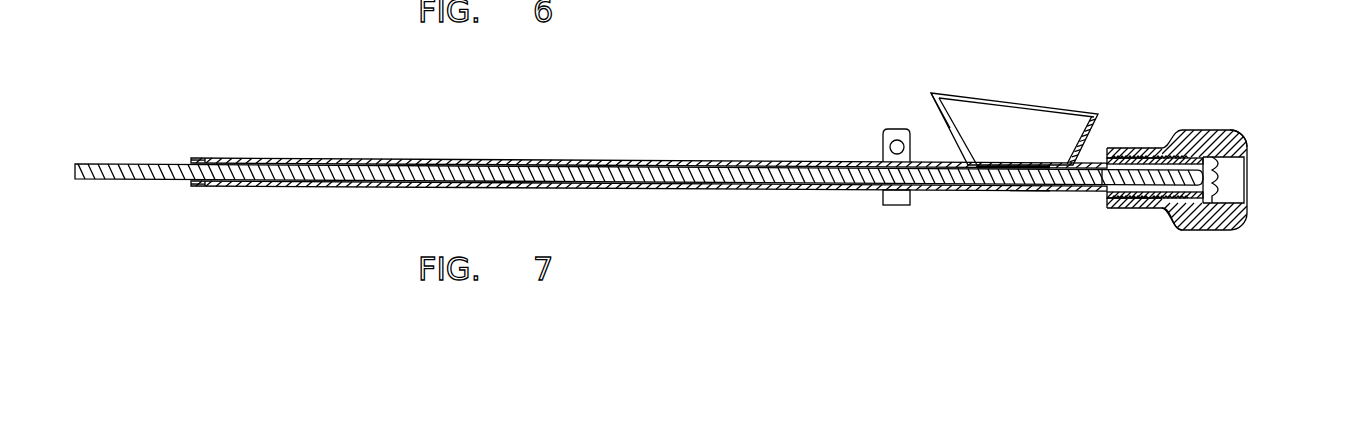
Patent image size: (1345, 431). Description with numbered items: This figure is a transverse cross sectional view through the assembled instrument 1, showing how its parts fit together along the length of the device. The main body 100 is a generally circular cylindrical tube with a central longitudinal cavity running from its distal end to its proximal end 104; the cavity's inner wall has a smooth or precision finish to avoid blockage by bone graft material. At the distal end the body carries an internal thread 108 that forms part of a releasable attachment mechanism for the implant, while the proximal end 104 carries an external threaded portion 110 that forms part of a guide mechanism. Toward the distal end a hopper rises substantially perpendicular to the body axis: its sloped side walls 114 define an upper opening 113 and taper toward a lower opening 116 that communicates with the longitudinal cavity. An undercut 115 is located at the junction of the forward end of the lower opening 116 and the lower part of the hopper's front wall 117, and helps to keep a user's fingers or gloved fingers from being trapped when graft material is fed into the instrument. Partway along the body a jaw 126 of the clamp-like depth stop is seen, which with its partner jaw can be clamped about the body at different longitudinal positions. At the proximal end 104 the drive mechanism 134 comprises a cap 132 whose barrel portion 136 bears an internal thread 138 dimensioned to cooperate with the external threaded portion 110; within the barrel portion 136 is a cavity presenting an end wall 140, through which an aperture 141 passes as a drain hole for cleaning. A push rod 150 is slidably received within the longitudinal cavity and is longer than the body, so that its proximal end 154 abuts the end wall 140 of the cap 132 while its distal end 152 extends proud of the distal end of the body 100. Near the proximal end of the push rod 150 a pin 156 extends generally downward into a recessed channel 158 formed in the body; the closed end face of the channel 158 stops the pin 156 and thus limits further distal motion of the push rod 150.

The instrument 1 is at (661, 148).
The body 100 is at (596, 148).
The proximal end 104 is at (1135, 219).
The internal thread 108 is at (203, 148).
The external threaded portion 110 is at (1168, 160).
The upper opening 113 is at (1018, 93).
The sloped side walls 114 is at (935, 117).
The undercut 115 is at (992, 158).
The lower opening 116 is at (1051, 156).
The front wall 117 is at (955, 125).
The jaw 126 is at (882, 147).
The cap 132 is at (1225, 122).
The drive mechanism 134 is at (1233, 145).
The barrel portion 136 is at (1131, 150).
The internal thread 138 is at (1104, 212).
The end wall 140 is at (1187, 229).
The aperture 141 is at (1222, 178).
The push rod 150 is at (380, 162).
The distal end 152 is at (118, 158).
The proximal end 154 is at (1191, 166).
The pin 156 is at (1028, 192).
The recessed channel 158 is at (1108, 209).